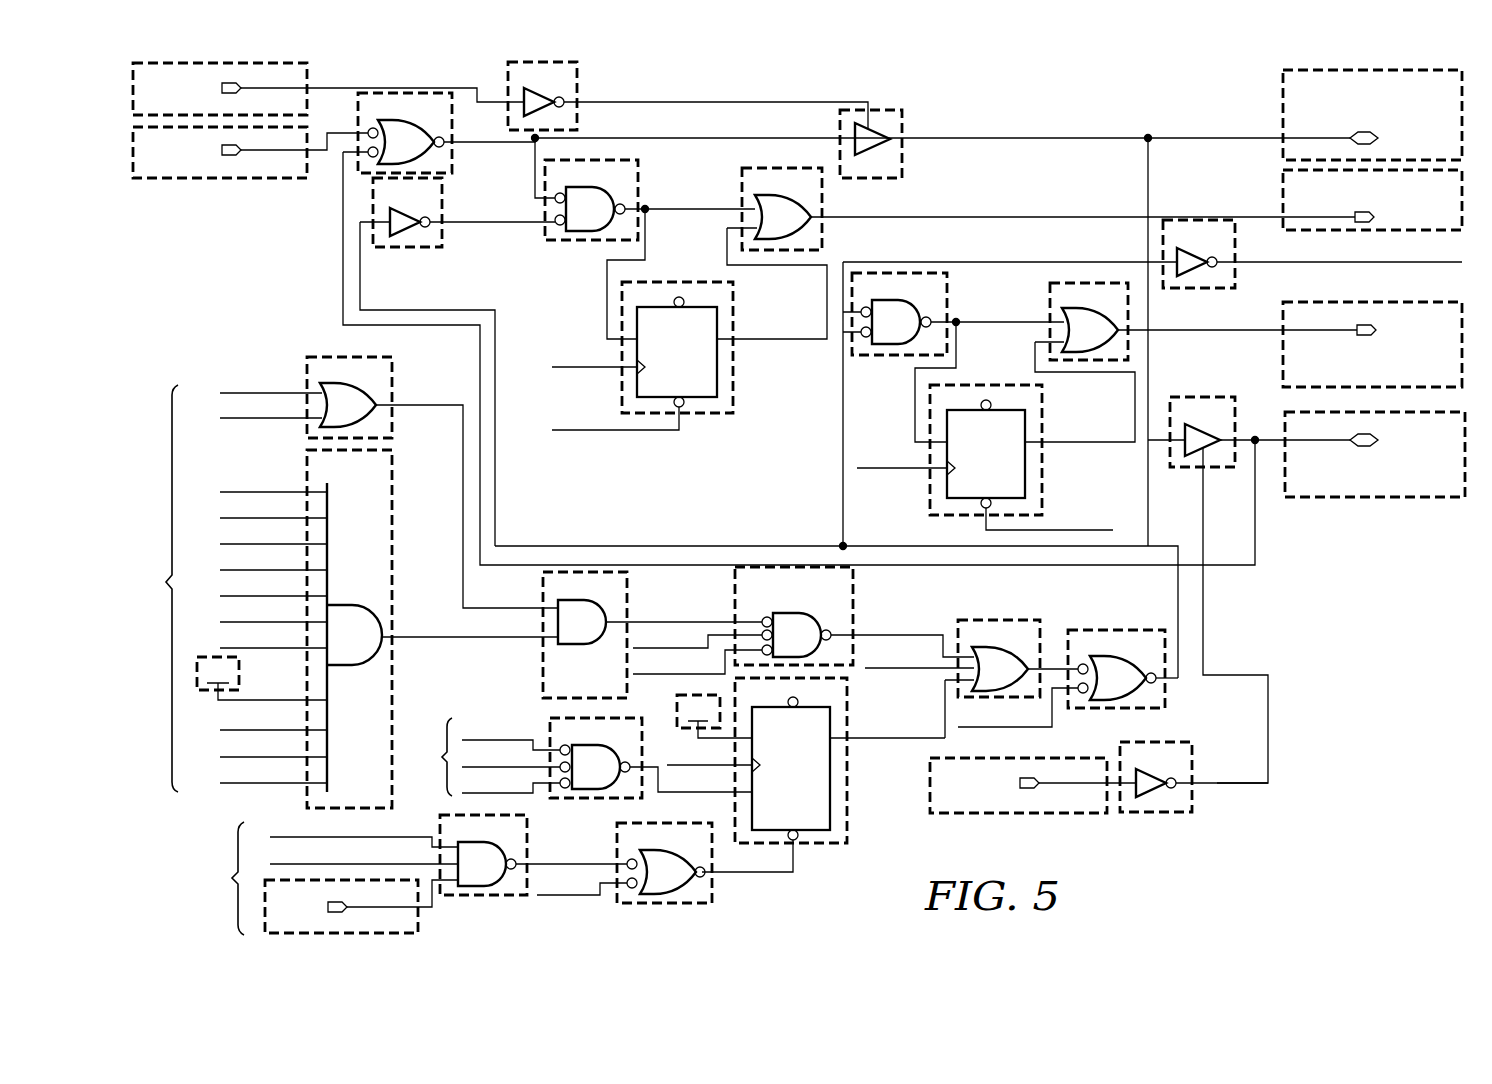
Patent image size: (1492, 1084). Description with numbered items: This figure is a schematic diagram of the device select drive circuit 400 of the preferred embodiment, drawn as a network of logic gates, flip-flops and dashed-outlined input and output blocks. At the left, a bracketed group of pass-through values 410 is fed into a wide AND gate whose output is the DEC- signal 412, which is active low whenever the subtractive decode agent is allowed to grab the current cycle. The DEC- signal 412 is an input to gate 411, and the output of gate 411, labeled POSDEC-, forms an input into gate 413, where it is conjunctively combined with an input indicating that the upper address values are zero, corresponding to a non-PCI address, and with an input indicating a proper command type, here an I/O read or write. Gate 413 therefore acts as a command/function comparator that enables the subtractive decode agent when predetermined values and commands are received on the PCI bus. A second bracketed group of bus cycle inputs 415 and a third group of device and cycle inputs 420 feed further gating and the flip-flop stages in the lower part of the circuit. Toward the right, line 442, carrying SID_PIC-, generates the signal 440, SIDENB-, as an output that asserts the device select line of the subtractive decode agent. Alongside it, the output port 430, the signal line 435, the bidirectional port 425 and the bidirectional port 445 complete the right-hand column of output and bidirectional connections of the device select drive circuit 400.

The device select drive circuit 400 is at (1240, 873).
The pass-through values 410 is at (227, 588).
The gate 411 is at (595, 648).
The DEC- signal 412 is at (468, 640).
The gate 413 is at (803, 620).
The bus cycle input signals 415 is at (359, 873).
The device/cycle input signals 420 is at (522, 757).
The PCIDEV- bidirectional port 425 is at (1370, 448).
The PCIENB- output port 430 is at (1370, 337).
The SIODEV signal line 435 is at (1362, 263).
The SIDENB- signal 440 is at (1377, 198).
The line 442 is at (500, 518).
The SIODEV- bidirectional port 445 is at (1364, 132).